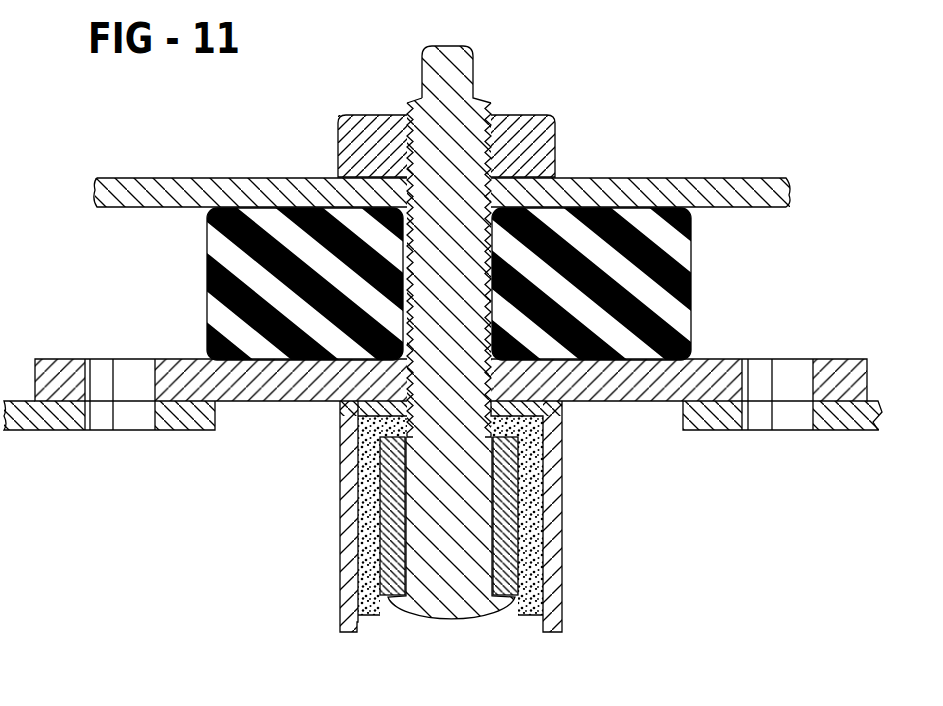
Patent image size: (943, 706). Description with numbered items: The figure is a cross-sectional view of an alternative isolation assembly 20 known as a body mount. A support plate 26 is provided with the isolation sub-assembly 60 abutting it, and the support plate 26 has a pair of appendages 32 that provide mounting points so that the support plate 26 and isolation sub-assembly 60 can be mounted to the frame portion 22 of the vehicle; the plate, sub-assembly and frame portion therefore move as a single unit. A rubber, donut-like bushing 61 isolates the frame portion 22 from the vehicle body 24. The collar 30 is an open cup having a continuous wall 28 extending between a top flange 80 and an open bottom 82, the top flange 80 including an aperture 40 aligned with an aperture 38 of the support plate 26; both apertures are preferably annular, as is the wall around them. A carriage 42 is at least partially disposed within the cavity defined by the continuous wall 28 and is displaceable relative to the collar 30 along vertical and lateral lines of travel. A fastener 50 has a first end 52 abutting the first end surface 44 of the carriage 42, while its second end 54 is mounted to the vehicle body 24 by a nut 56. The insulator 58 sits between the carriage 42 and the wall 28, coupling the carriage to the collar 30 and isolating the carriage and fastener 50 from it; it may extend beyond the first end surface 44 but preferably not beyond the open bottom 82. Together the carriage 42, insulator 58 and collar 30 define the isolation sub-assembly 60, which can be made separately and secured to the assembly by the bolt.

The isolation assembly 20 is at (632, 100).
The frame portion 22 is at (33, 418).
The vehicle body 24 is at (190, 190).
The support plate 26 is at (313, 385).
The continuous wall 28 is at (563, 530).
The collar 30 is at (563, 612).
The appendages 32 is at (841, 372).
The aperture 38 is at (486, 372).
The aperture 40 is at (488, 406).
The carriage 42 is at (398, 540).
The first end surface 44 is at (513, 598).
The fastener 50 is at (410, 257).
The first end 52 is at (437, 600).
The second end 54 is at (465, 83).
The nut 56 is at (368, 125).
The insulator 58 is at (525, 568).
The isolation sub-assembly 60 is at (330, 513).
The bushing 61 is at (682, 265).
The top flange 80 is at (525, 407).
The open bottom 82 is at (365, 628).